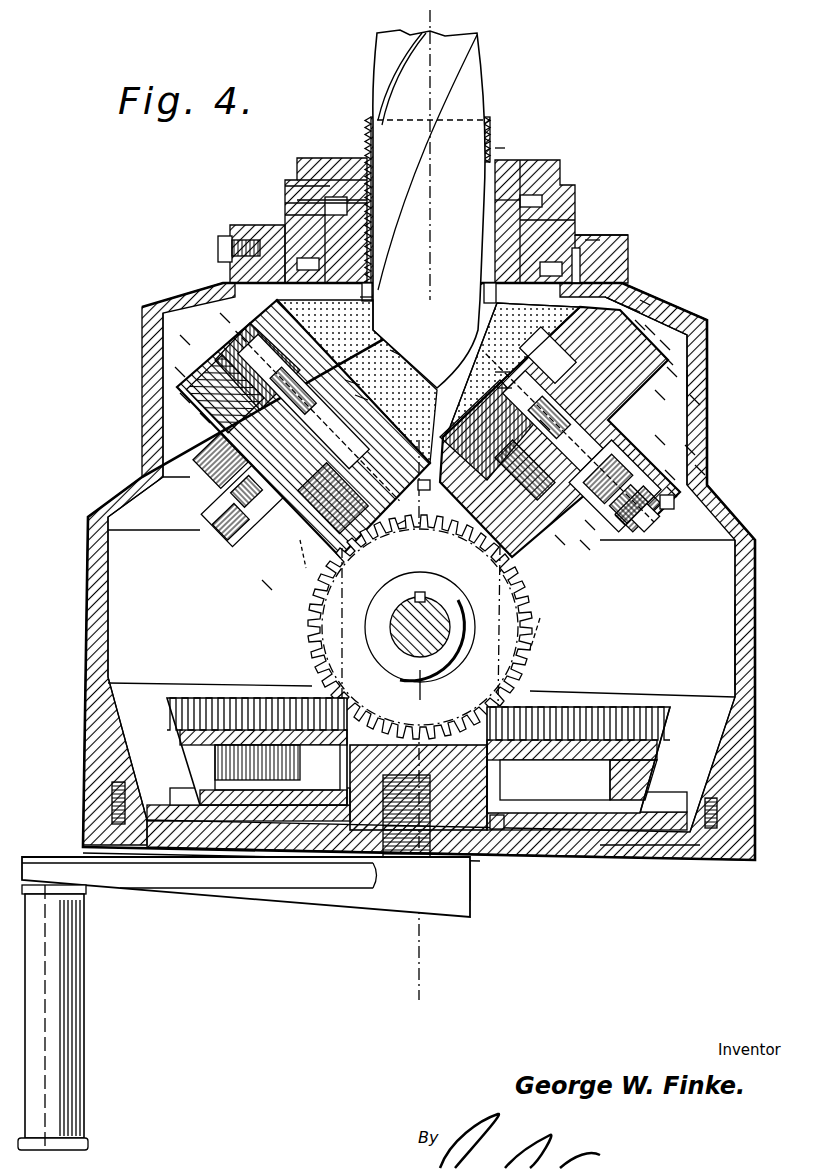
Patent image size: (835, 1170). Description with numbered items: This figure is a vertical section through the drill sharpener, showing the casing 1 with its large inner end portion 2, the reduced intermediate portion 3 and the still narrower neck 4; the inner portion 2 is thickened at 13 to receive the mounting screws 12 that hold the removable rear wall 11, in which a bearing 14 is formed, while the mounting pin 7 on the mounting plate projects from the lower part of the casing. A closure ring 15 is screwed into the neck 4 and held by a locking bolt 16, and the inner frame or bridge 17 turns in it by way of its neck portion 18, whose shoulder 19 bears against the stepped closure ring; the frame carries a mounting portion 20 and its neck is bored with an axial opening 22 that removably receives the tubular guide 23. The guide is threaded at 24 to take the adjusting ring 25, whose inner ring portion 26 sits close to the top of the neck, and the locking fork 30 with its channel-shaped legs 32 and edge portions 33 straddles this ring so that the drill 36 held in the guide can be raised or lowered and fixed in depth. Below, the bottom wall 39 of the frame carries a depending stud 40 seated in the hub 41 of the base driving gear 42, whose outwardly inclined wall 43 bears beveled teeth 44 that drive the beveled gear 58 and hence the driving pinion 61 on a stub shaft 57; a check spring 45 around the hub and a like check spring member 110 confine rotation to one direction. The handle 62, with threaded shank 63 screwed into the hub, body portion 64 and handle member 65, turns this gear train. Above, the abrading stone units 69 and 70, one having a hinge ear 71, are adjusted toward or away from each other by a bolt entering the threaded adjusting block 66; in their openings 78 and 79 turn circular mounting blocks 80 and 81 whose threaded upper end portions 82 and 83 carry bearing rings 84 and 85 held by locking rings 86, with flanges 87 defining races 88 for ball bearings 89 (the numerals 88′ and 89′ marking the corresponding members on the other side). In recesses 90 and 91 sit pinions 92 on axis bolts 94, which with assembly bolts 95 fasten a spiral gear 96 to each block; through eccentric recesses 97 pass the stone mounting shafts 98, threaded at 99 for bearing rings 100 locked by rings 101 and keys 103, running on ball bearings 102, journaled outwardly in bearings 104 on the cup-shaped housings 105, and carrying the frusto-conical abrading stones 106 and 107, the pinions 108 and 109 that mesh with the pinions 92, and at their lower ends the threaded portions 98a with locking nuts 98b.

The casing 1 is at (757, 622).
The inner end portion 2 is at (744, 676).
The intermediate portion 3 is at (445, 18).
The neck 4 is at (625, 275).
The mounting pin 7 is at (400, 528).
The removable rear wall 11 is at (667, 845).
The mounting screws 12 is at (710, 845).
The thickened portion 13 is at (755, 775).
The bearing 14 is at (497, 860).
The closure ring 15 is at (600, 240).
The locking bolt 16 is at (222, 240).
The inner frame or bridge 17 is at (490, 648).
The neck portion 18 is at (378, 293).
The shoulder 19 is at (285, 240).
The mounting portion 20 is at (362, 300).
The axial opening 22 is at (507, 200).
The tubular guide 23 is at (497, 122).
The threads 24 is at (497, 148).
The adjusting ring 25 is at (548, 163).
The inner ring portion 26 is at (285, 188).
The locking fork 30 is at (295, 180).
The channel-shaped legs 32 is at (300, 182).
The edge portions 33 is at (330, 158).
The drill 36 is at (470, 105).
The bottom wall 39 is at (358, 758).
The depending stud 40 is at (492, 764).
The hub 41 is at (330, 855).
The base driving gear 42 is at (610, 803).
The outwardly inclined wall 43 is at (642, 782).
The beveled teeth 44 is at (630, 712).
The check spring 45 is at (540, 830).
The stub shaft 57 is at (400, 628).
The beveled gear 58 is at (482, 681).
The driving pinion 61 is at (348, 620).
The handle 62 is at (468, 916).
The threaded shank 63 is at (412, 845).
The body portion 64 is at (256, 877).
The handle member 65 is at (66, 1040).
The threaded adjusting block 66 is at (425, 482).
The abrading stone unit 69 is at (225, 318).
The abrading stone unit 70 is at (690, 380).
The hinge ear 71 is at (304, 565).
The opening 78 is at (180, 372).
The opening 79 is at (660, 395).
The circular mounting block 80 is at (185, 398).
The circular mounting block 81 is at (668, 360).
The threaded upper end portion 82 is at (185, 340).
The threaded upper end portion 83 is at (645, 302).
The bearing ring 84 is at (352, 380).
The bearing ring 85 is at (632, 295).
The locking ring 86 is at (625, 258).
The flange 87 is at (640, 325).
The bearing race 88 is at (665, 345).
The spring 88′ is at (700, 400).
The ball bearings 89 is at (650, 330).
The bolt 89′ is at (672, 372).
The recess 90 is at (205, 418).
The recess 91 is at (545, 425).
The pinions 92 is at (560, 540).
The axis bolts 94 is at (590, 525).
The assembly bolts 95 is at (620, 520).
The spiral gear 96 is at (690, 450).
The recess 97 is at (360, 395).
The stone mounting shaft 98 is at (660, 440).
The threaded portion 98a is at (665, 505).
The locking nut 98b is at (672, 492).
The threaded upper end 99 is at (505, 372).
The bearing ring 100 is at (505, 388).
The locking ring 101 is at (592, 240).
The ball bearings 102 is at (500, 432).
The key 103 is at (505, 348).
The bearing 104 is at (670, 475).
The cup-shaped housing 105 is at (585, 545).
The abrading stone 106 is at (395, 352).
The abrading stone 107 is at (462, 335).
The pinion 108 is at (268, 586).
The pinion 109 is at (700, 470).
The check spring member 110 is at (575, 250).